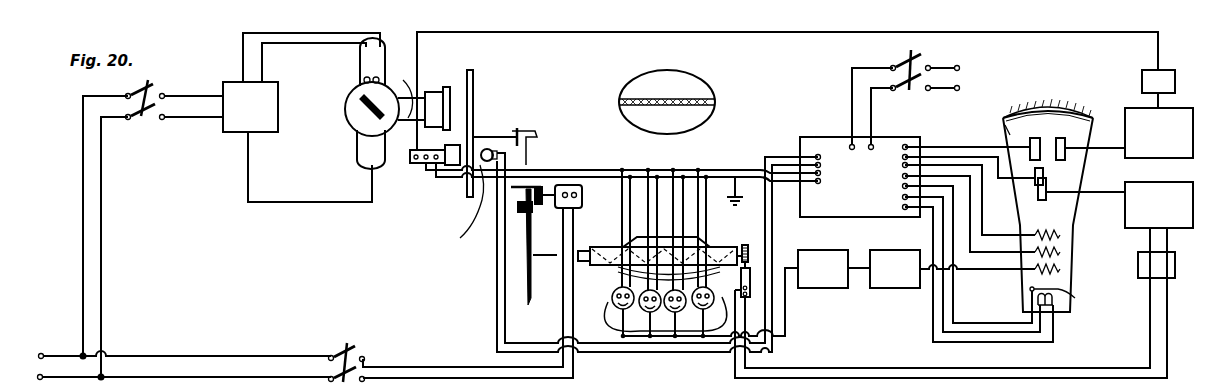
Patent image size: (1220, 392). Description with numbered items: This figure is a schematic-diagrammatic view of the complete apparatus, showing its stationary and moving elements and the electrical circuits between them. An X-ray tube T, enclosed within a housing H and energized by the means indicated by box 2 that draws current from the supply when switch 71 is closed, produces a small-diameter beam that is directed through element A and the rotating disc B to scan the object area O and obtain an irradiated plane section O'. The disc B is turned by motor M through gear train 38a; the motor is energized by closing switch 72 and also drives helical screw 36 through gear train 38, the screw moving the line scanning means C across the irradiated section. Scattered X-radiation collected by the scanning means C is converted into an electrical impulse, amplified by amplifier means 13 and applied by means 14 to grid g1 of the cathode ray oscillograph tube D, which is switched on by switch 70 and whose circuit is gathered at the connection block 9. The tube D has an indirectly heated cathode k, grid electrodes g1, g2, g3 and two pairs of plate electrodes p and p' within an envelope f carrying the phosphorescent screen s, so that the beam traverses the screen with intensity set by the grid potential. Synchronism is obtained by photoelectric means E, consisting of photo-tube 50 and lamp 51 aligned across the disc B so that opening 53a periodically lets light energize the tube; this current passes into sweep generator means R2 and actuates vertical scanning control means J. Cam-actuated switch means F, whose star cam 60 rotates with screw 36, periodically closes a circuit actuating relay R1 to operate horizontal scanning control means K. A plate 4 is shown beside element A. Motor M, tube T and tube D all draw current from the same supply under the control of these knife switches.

The switch 71 is at (150, 120).
The means for actuating the X-ray tube 2 is at (237, 134).
The X-ray tube T is at (346, 130).
The housing H is at (396, 90).
The beam scanning element A is at (437, 90).
The plate 4 is at (450, 85).
The rotating disc B is at (478, 95).
The photo-sensitive tube 50 is at (430, 166).
The photoelectric means E is at (455, 168).
The lamp 51 is at (491, 150).
The gear train 38a is at (537, 142).
The opening 53a is at (466, 208).
The gear train 38 is at (527, 215).
The motor M is at (583, 195).
The helical screw 36 is at (608, 250).
The line scanning means C is at (612, 293).
The star cam 60 is at (754, 236).
The cam-actuated switch means F is at (750, 290).
The amplifier means 13 is at (840, 289).
The means for applying amplified current to grid 14 is at (895, 289).
The distributor 9 is at (813, 137).
The current supply switch 70 is at (896, 48).
The object area O is at (672, 91).
The irradiated plane section O' is at (686, 95).
The cathode ray oscillograph tube D is at (1080, 113).
The phosphorescent screen s is at (1016, 110).
The envelope f is at (1005, 130).
The plate electrodes p is at (1077, 116).
The plate electrodes p' is at (1058, 181).
The grid electrode g3 is at (1062, 237).
The grid electrode g2 is at (1062, 254).
The grid electrode g1 is at (1062, 271).
The indirectly heated cathode k is at (1076, 298).
The sweep generator means R2 is at (1170, 78).
The vertical scanning control means J is at (1180, 111).
The horizontal scanning control means K is at (1187, 229).
The relay R1 is at (1172, 285).
The switch 72 is at (356, 342).